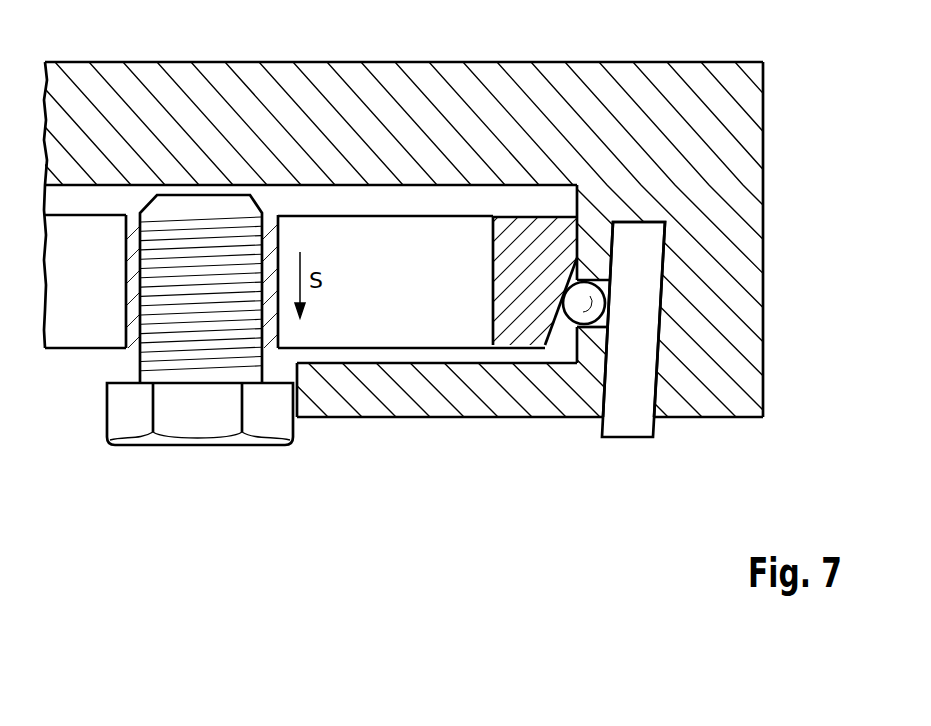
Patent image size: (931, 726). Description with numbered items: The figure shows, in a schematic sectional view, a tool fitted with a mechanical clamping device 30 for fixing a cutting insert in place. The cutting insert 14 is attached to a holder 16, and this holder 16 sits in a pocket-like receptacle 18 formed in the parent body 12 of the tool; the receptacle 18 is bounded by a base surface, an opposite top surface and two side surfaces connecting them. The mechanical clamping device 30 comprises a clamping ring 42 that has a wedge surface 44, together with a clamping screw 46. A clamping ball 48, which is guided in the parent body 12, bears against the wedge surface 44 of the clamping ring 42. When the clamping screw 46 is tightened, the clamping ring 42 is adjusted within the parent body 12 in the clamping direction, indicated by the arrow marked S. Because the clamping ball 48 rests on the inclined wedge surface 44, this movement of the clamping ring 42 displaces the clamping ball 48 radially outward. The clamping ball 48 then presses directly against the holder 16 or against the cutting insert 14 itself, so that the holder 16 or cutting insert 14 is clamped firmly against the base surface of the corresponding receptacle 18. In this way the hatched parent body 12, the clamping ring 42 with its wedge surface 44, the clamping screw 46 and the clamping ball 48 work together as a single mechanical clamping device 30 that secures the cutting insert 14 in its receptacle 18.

The parent body 12 is at (311, 78).
The cutting insert 14 is at (634, 361).
The holder 16 is at (625, 423).
The receptacle 18 is at (655, 362).
The mechanical clamping device 30 is at (116, 512).
The clamping ring 42 is at (508, 343).
The wedge surface 44 is at (550, 344).
The clamping screw 46 is at (203, 430).
The clamping ball 48 is at (562, 335).